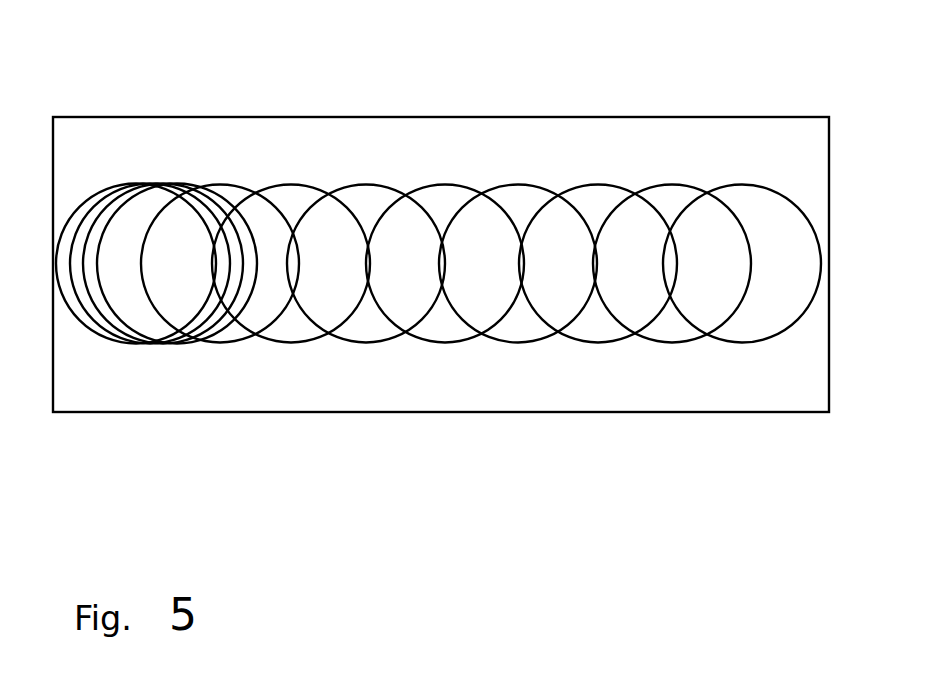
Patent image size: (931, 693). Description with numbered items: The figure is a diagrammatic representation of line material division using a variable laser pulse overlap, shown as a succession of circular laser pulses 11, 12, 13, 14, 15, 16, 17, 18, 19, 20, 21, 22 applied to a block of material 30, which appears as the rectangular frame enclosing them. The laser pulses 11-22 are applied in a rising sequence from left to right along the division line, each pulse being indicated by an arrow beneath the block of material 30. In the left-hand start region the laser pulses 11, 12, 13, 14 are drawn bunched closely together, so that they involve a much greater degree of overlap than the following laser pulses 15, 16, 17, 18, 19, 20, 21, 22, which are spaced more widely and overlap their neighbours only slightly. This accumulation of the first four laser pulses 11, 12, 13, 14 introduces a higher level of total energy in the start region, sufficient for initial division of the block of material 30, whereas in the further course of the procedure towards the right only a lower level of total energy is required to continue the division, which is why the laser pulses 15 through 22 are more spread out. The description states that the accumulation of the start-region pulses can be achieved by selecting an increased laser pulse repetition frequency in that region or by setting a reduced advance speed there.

The laser pulse 11 is at (125, 372).
The laser pulse 12 is at (140, 372).
The laser pulse 13 is at (155, 372).
The laser pulse 14 is at (170, 372).
The laser pulse 15 is at (225, 367).
The laser pulse 16 is at (298, 367).
The laser pulse 17 is at (369, 367).
The laser pulse 18 is at (455, 367).
The laser pulse 19 is at (522, 367).
The laser pulse 20 is at (602, 367).
The laser pulse 21 is at (678, 367).
The laser pulse 22 is at (748, 367).
The block of material 30 is at (610, 148).